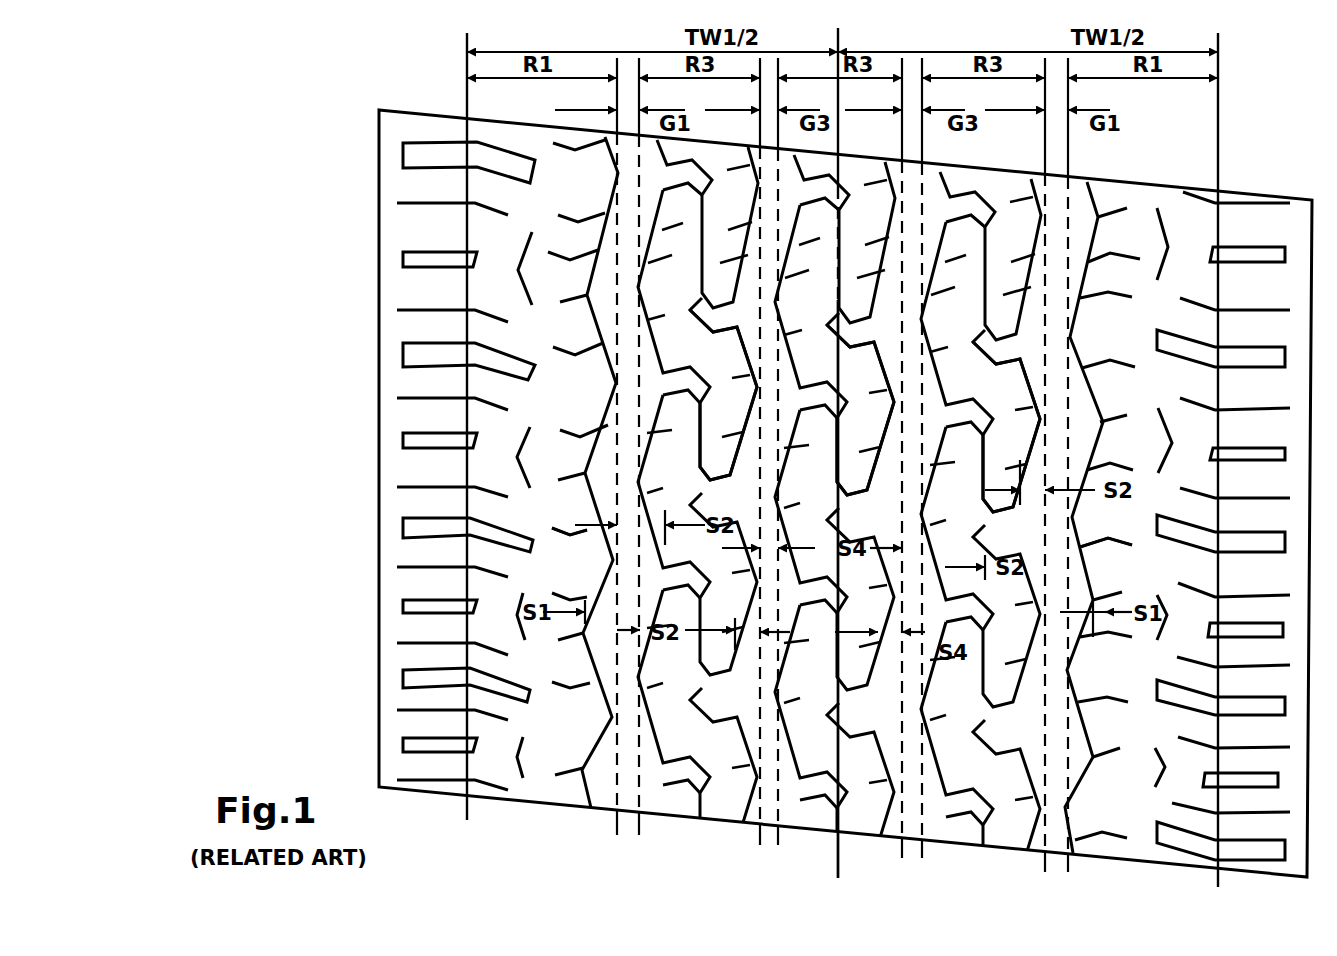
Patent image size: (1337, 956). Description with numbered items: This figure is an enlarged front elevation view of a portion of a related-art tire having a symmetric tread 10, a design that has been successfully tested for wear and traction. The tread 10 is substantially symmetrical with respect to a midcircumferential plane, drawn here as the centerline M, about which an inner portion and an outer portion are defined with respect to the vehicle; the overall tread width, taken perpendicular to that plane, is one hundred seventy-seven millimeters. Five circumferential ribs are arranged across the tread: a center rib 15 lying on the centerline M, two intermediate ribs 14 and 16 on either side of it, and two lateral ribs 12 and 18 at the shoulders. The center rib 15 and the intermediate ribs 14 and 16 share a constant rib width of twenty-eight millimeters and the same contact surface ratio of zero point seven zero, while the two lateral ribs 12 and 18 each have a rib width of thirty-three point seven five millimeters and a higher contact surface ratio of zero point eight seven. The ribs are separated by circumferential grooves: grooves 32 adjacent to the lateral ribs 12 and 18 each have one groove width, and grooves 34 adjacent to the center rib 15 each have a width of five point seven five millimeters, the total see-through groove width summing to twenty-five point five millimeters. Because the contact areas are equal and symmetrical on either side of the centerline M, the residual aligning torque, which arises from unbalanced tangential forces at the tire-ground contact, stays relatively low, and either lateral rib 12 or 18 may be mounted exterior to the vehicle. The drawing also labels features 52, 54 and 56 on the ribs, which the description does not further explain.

The symmetric tread 10 is at (338, 386).
The lateral rib 12 is at (543, 790).
The intermediate rib 14 is at (683, 818).
The center rib 15 is at (823, 815).
The intermediate rib 16 is at (987, 835).
The lateral rib 18 is at (1140, 833).
The grooves adjacent to lateral ribs 32 is at (618, 812).
The grooves adjacent to the center rib 34 is at (757, 818).
The lateral sipe 52 is at (551, 561).
The block 54 is at (699, 436).
The block 56 is at (848, 471).
The tire equatorial plane M is at (838, 870).